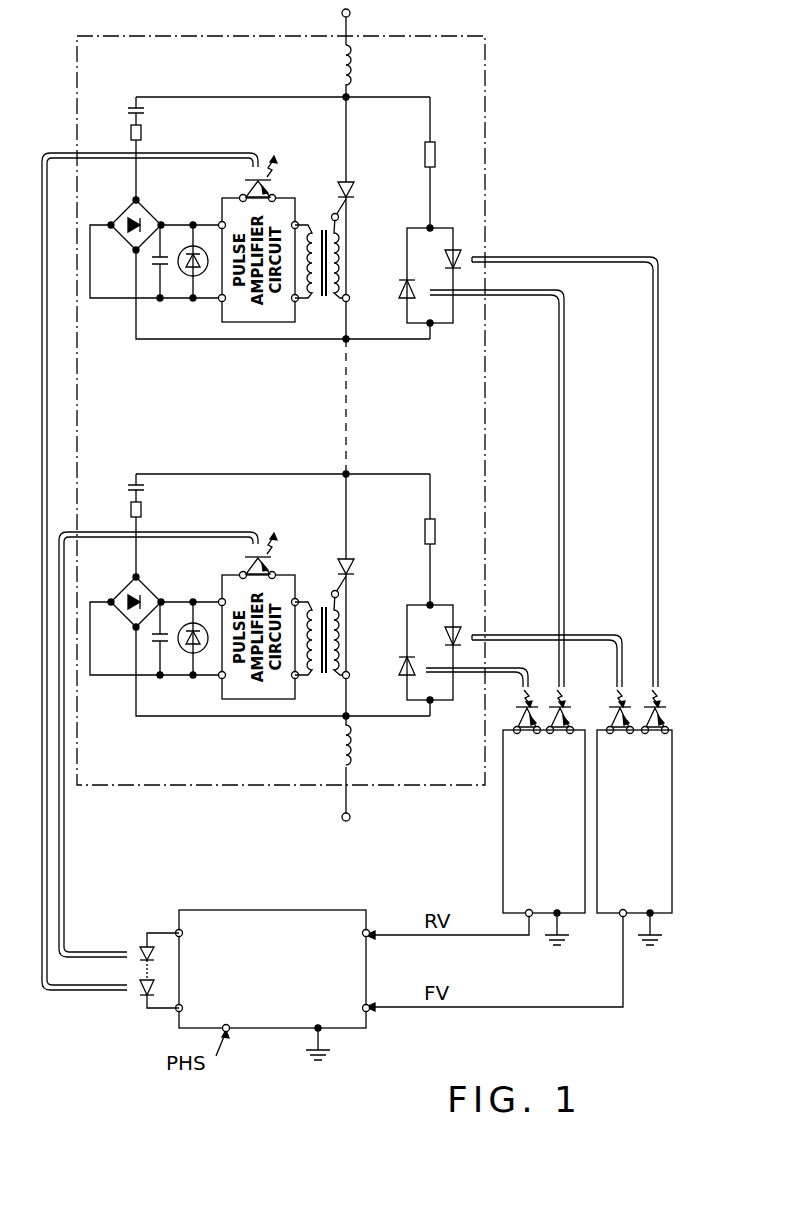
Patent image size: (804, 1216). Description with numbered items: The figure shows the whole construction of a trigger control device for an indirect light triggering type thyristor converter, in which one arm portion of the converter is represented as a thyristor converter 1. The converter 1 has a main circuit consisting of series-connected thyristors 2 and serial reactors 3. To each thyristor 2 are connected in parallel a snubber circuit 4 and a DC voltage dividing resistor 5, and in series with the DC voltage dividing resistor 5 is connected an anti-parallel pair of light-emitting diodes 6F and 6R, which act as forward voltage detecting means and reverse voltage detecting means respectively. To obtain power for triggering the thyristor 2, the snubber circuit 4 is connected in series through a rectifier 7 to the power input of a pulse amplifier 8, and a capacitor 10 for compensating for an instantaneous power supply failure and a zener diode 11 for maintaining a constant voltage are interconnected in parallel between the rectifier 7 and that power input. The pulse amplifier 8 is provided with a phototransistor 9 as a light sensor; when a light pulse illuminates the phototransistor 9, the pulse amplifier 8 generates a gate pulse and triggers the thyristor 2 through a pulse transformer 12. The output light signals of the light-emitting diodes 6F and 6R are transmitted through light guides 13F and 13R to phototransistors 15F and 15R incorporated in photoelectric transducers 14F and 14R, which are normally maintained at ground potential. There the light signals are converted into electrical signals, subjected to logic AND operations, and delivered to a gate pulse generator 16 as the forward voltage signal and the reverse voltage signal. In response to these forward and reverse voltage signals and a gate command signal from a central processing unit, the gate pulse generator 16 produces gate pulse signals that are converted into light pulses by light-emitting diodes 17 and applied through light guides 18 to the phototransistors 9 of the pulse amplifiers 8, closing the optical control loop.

The thyristor converter 1 is at (488, 152).
The thyristor 2 is at (354, 188).
The serial reactor 3 is at (354, 72).
The snubber circuit 4 is at (150, 313).
The DC voltage dividing resistor 5 is at (436, 155).
The light-emitting diode 6F is at (458, 250).
The light-emitting diode 6R is at (403, 283).
The rectifier 7 is at (127, 208).
The pulse amplifier 8 is at (290, 322).
The phototransistor 9 is at (244, 186).
The capacitor 10 is at (156, 270).
The zener diode 11 is at (188, 277).
The pulse transformer 12 is at (318, 230).
The light guide 13F is at (648, 425).
The light guide 13R is at (556, 425).
The photoelectric transducer 14F is at (608, 918).
The photoelectric transducer 14R is at (503, 838).
The phototransistor 15F is at (645, 712).
The phototransistor 15R is at (515, 713).
The gate pulse generator 16 is at (344, 1030).
The light-emitting diode 17 is at (142, 950).
The light guide 18 is at (42, 443).